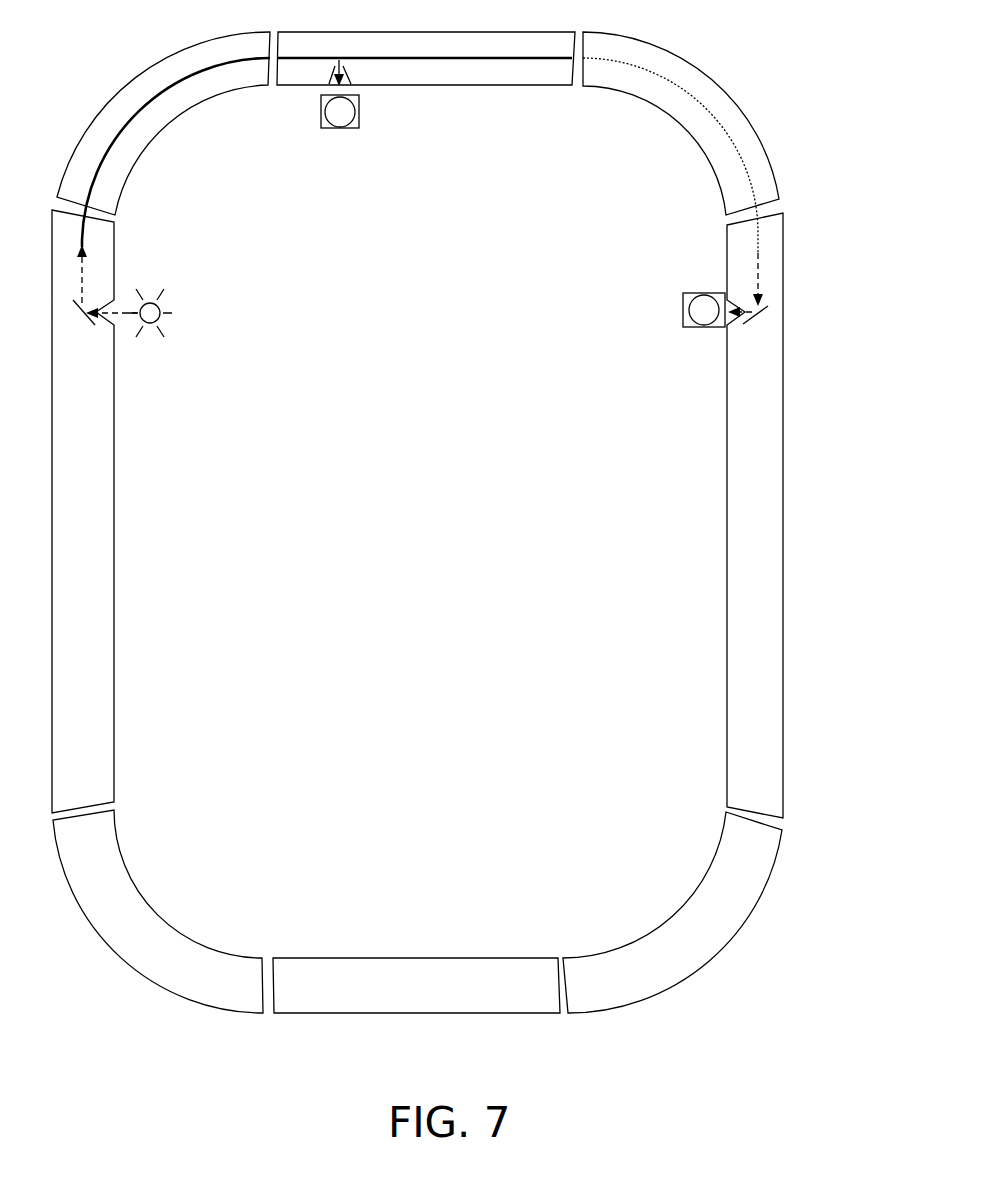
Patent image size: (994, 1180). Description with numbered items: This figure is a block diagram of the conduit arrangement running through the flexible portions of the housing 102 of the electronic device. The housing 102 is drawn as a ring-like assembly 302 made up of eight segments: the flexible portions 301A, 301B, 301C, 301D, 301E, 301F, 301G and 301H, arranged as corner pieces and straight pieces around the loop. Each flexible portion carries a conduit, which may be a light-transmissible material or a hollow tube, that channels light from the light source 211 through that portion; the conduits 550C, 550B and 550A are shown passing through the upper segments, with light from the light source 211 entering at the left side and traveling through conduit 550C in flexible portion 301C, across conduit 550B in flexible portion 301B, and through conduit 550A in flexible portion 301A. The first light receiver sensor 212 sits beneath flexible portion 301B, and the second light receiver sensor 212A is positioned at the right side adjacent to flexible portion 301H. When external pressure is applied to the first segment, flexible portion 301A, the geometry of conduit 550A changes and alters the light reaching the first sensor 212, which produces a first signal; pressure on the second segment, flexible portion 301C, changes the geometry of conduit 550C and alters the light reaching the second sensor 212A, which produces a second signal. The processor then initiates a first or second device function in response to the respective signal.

The housing 102 is at (437, 537).
The light guide ring 302 is at (423, 537).
The flexible portion 301A is at (748, 112).
The flexible portion 301B is at (403, 87).
The flexible portion 301C is at (153, 130).
The flexible portion 301D is at (52, 577).
The flexible portion 301E is at (100, 915).
The flexible portion 301F is at (475, 1013).
The flexible portion 301G is at (717, 963).
The flexible portion 301H is at (783, 563).
The conduit 550A is at (688, 88).
The conduit 550B is at (427, 60).
The conduit 550C is at (202, 65).
The light source 211 is at (158, 303).
The light receiver sensor 212 is at (313, 92).
The second light receiver sensor 212A is at (678, 290).